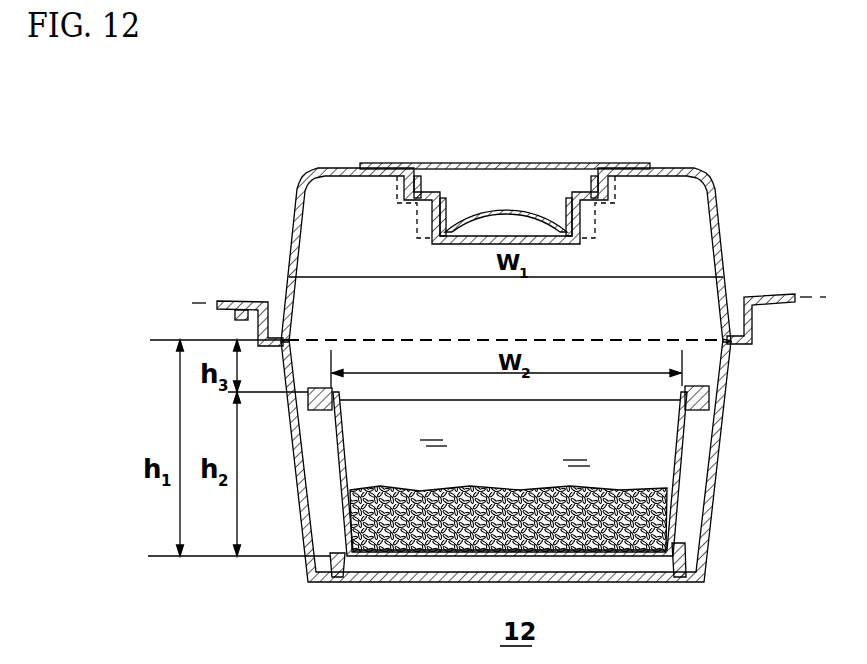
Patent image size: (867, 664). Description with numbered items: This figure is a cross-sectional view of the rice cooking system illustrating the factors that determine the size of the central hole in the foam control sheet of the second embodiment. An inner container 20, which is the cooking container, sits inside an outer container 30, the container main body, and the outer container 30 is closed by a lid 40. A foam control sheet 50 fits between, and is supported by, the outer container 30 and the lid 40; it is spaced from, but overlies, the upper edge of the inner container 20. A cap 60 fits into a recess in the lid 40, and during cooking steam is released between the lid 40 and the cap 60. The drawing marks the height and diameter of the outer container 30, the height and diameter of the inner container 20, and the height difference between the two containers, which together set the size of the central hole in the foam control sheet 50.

The inner container 20 is at (692, 418).
The outer container 30 is at (724, 468).
The lid 40 is at (735, 242).
The foam control sheet 50 is at (670, 343).
The cap 60 is at (568, 162).